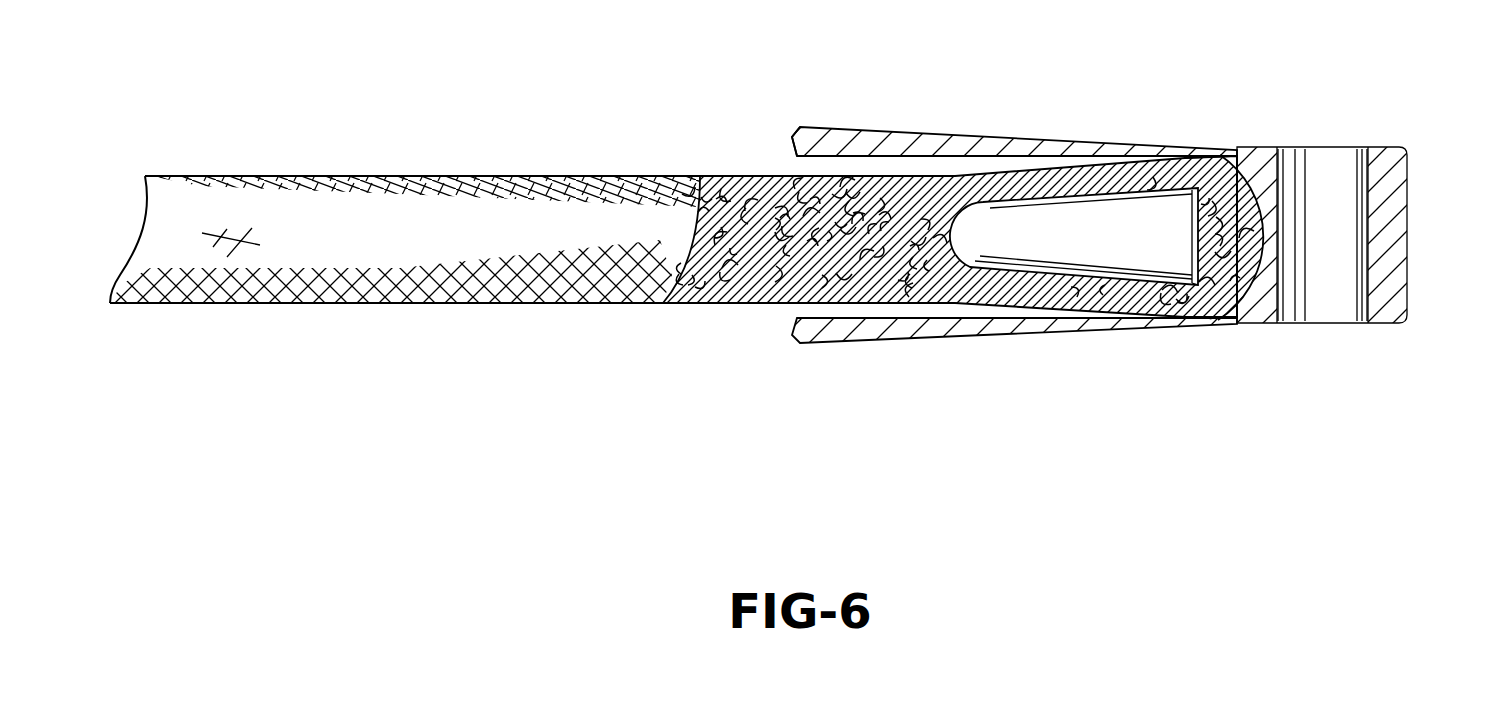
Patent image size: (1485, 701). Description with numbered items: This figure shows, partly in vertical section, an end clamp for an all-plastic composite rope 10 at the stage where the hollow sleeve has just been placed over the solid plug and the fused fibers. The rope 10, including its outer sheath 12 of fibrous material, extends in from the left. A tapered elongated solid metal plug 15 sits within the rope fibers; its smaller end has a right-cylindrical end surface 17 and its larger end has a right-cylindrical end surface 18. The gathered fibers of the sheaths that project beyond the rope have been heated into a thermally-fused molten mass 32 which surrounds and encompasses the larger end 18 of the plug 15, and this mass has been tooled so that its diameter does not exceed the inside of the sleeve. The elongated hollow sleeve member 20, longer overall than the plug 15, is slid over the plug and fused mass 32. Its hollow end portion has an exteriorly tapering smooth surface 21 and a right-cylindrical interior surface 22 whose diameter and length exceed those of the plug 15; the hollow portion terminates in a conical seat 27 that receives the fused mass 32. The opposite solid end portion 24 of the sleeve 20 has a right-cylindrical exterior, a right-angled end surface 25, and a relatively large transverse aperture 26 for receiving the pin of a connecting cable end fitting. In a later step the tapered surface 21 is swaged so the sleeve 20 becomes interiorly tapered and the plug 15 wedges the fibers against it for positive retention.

The all-plastic composite rope 10 is at (533, 148).
The outer sheath 12 is at (530, 303).
The tapered elongated solid metal plug 15 is at (1083, 265).
The right-cylindrical end surface 17 is at (955, 258).
The right-cylindrical end surface 18 is at (1215, 300).
The elongated hollow sleeve member 20 is at (1070, 118).
The exteriorly tapering smooth surface 21 is at (898, 130).
The interior surface 22 is at (790, 160).
The solid end portion 24 is at (1260, 325).
The right-angled end surface 25 is at (1408, 200).
The transverse aperture 26 is at (1323, 167).
The conical seat 27 is at (1240, 160).
The thermally-fused molten mass 32 is at (1198, 152).